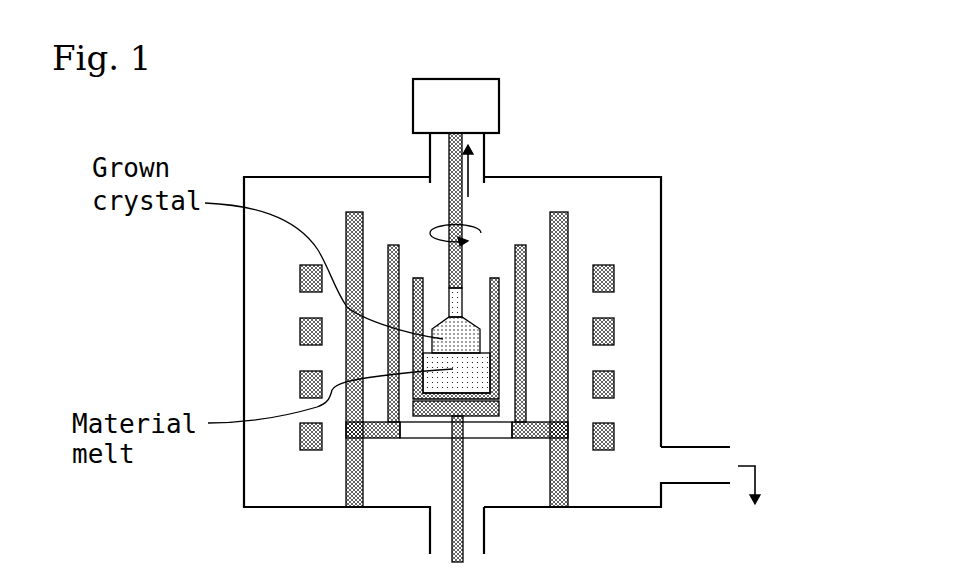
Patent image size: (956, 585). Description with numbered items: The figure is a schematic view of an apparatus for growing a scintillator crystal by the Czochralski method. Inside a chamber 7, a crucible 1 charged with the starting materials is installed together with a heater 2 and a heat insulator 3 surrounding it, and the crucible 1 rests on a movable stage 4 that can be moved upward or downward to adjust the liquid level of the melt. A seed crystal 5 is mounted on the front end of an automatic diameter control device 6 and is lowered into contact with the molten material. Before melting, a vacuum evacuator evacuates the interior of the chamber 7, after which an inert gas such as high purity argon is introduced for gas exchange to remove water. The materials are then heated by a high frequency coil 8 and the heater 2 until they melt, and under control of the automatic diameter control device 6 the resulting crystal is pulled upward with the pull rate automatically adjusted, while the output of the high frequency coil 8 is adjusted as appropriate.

The crucible 1 is at (500, 289).
The heater 2 is at (523, 324).
The heat insulator 3 is at (562, 225).
The movable stage 4 is at (485, 407).
The seed crystal 5 is at (452, 299).
The automatic diameter control device 6 is at (500, 107).
The chamber 7 is at (244, 343).
The high frequency coil 8 is at (607, 438).